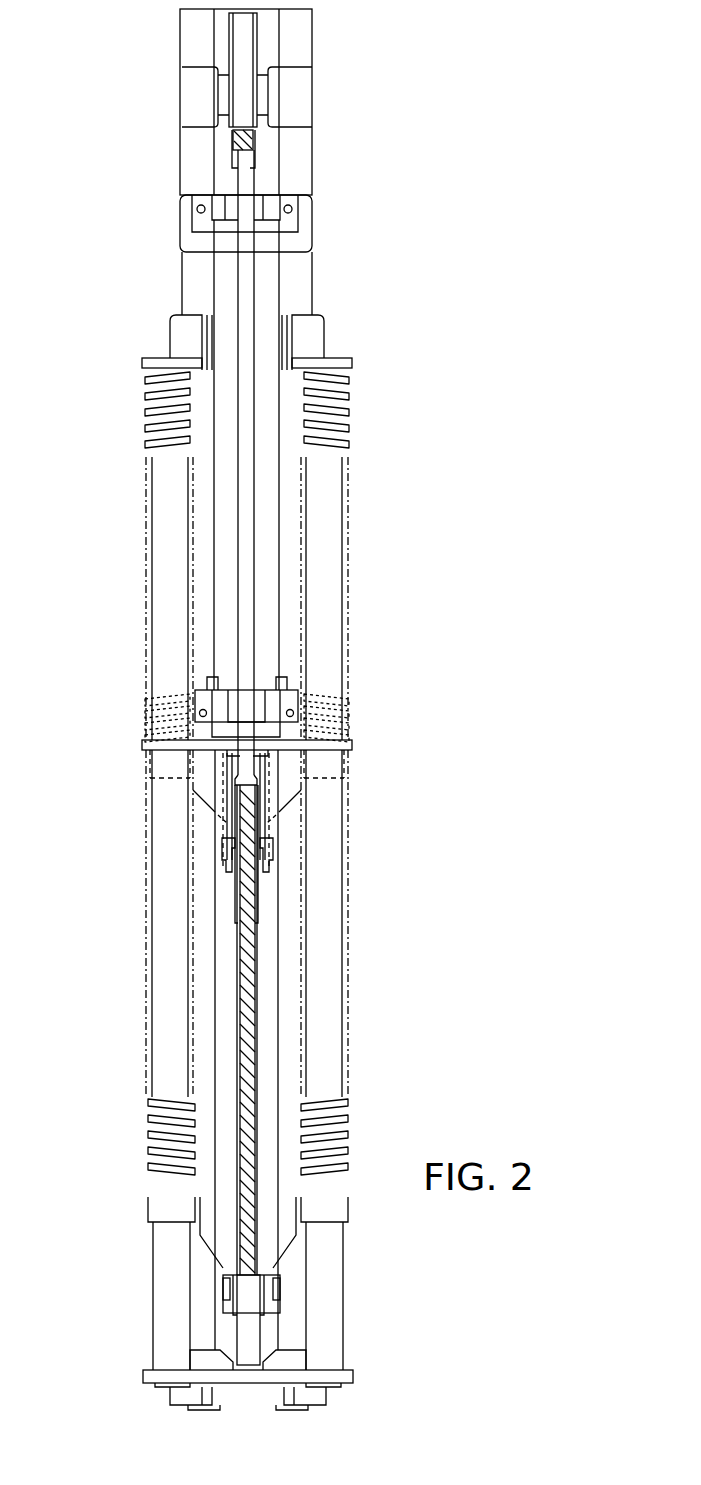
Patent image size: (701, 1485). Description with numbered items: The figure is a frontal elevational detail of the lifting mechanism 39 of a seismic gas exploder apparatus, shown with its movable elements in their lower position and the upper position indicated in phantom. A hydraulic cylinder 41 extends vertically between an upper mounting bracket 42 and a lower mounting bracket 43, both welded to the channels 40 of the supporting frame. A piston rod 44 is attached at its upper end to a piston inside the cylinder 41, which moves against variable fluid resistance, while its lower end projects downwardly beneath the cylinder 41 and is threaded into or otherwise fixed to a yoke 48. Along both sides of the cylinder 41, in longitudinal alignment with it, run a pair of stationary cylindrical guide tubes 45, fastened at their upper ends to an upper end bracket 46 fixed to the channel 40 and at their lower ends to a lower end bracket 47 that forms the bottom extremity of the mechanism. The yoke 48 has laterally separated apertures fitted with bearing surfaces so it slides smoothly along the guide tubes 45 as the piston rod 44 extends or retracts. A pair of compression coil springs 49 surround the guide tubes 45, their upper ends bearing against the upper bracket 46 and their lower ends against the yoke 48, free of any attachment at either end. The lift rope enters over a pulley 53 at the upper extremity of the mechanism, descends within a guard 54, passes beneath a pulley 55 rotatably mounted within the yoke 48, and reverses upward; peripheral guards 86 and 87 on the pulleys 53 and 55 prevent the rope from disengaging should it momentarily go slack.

The lifting mechanism 39 is at (391, 104).
The channels 40 is at (193, 292).
The cylinder 41 is at (273, 594).
The upper mounting bracket 42 is at (302, 236).
The lower mounting bracket 43 is at (293, 697).
The piston rod 44 is at (262, 1068).
The guide tubes 45 is at (166, 545).
The upper end bracket 46 is at (182, 346).
The lower end bracket 47 is at (153, 1377).
The yoke 48 is at (265, 850).
The compression coil springs 49 is at (350, 396).
The pulley 53 is at (235, 141).
The guard 54 is at (247, 514).
The pulley 55 is at (240, 905).
The peripheral guard 86 is at (243, 48).
The peripheral guard 87 is at (250, 1348).